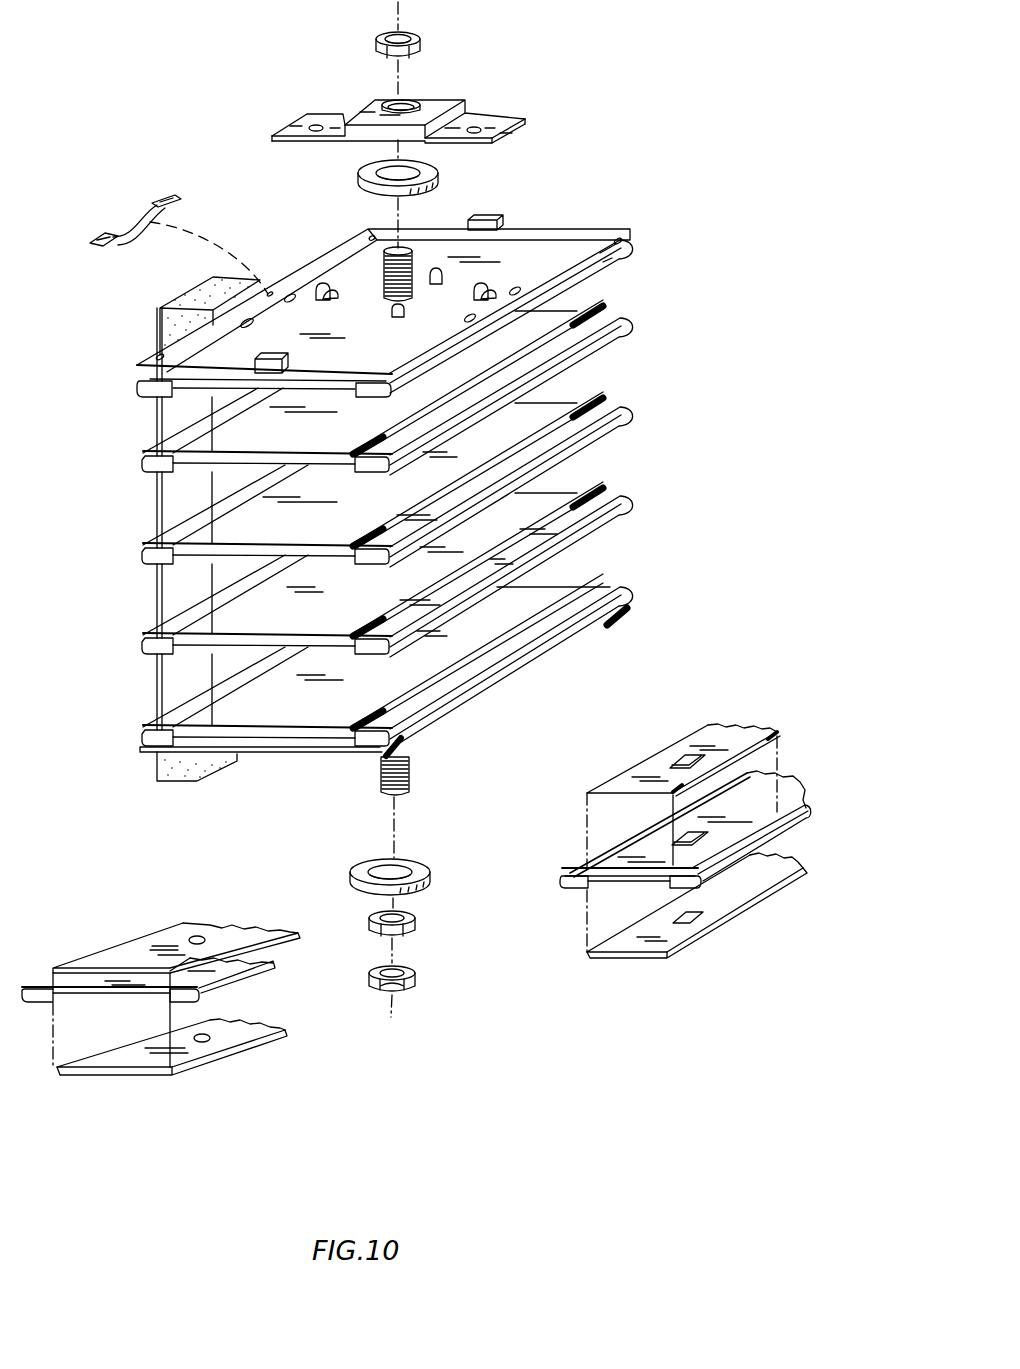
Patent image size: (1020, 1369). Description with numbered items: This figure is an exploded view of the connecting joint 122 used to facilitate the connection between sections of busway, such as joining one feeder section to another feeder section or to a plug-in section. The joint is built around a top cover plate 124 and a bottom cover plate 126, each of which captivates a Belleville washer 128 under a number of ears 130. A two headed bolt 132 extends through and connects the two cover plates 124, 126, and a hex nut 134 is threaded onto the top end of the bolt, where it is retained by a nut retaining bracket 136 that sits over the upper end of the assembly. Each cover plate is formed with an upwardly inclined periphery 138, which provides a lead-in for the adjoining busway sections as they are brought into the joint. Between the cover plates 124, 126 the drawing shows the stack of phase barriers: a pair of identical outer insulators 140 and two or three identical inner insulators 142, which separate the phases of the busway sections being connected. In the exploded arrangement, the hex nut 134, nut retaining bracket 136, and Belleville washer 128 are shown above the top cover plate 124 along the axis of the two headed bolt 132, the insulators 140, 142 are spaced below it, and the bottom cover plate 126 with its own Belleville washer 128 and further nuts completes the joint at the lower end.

The connecting joint 122 is at (548, 130).
The top cover plate 124 is at (338, 302).
The bottom cover plate 126 is at (147, 742).
The Belleville washer 128 is at (441, 174).
The ears 130 is at (437, 273).
The two headed bolt 132 is at (410, 768).
The hex nut 134 is at (419, 48).
The nut retaining bracket 136 is at (441, 107).
The upwardly inclined periphery 138 is at (628, 238).
The outer insulators 140 is at (610, 254).
The inner insulators 142 is at (633, 327).